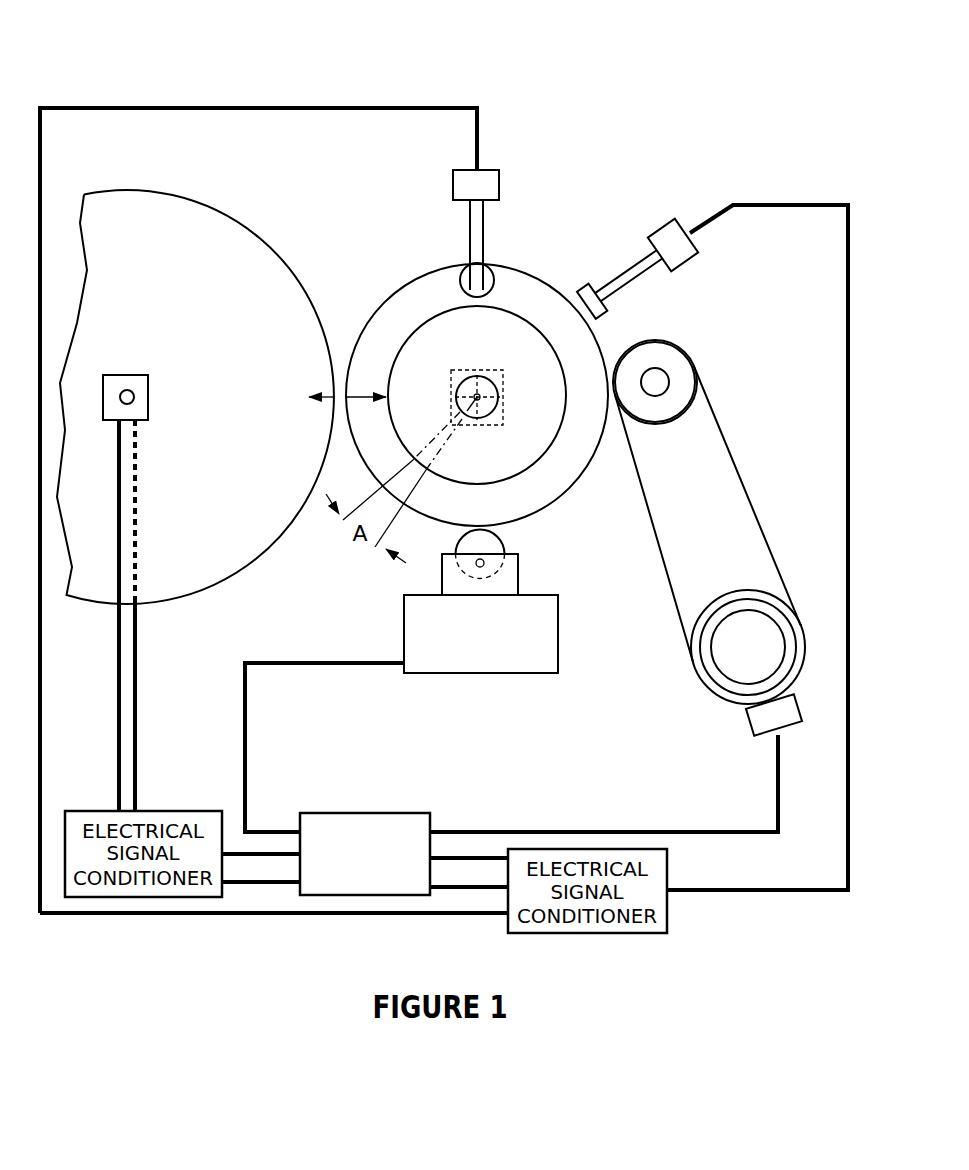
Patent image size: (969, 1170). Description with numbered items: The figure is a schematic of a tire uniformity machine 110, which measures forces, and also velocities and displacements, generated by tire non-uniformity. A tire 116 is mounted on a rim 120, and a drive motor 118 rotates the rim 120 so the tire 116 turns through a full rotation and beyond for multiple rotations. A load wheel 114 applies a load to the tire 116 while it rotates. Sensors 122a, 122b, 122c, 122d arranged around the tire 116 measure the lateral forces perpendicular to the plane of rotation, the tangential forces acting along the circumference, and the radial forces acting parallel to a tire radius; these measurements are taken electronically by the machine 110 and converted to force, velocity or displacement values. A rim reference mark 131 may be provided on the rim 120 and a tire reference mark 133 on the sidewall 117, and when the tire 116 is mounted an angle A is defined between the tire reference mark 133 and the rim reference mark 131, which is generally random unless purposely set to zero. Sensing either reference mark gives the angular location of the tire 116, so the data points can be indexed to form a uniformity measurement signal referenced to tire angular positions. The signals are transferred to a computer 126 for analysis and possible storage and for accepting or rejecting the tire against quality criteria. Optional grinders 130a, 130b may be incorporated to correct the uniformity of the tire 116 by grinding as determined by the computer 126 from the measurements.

The tire uniformity machine 110 is at (569, 76).
The load wheel 114 is at (206, 207).
The tire 116 is at (460, 268).
The sidewall 117 is at (400, 325).
The drive motor 118 is at (450, 393).
The rim 120 is at (527, 438).
The sensor 122a is at (661, 230).
The sensor 122b is at (500, 185).
The sensor 122c is at (127, 388).
The sensor 122d is at (148, 398).
The computer 126 is at (432, 822).
The grinder 130a is at (724, 410).
The grinder 130b is at (385, 607).
The rim reference mark 131 is at (432, 463).
The tire reference mark 133 is at (406, 462).